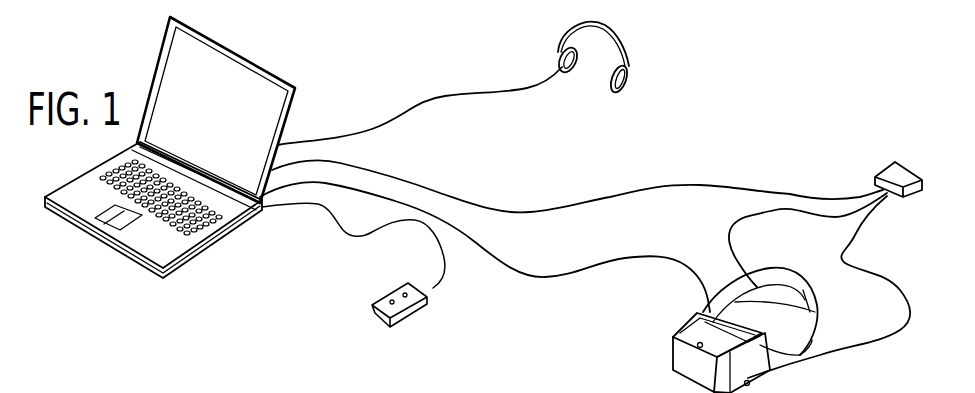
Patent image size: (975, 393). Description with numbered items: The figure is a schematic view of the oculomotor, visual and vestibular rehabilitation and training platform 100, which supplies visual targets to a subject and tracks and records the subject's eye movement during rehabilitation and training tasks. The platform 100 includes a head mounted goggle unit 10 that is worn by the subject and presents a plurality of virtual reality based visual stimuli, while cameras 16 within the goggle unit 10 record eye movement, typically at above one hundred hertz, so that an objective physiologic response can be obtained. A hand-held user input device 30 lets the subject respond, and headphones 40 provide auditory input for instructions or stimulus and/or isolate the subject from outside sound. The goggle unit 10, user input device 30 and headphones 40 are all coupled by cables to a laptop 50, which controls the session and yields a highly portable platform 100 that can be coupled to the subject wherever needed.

The rehabilitation and training platform 100 is at (770, 102).
The head mounted goggle unit 10 is at (682, 377).
The user input device 30 is at (417, 312).
The headphones 40 is at (627, 73).
The laptop 50 is at (187, 267).
The cameras 16 is at (115, 384).